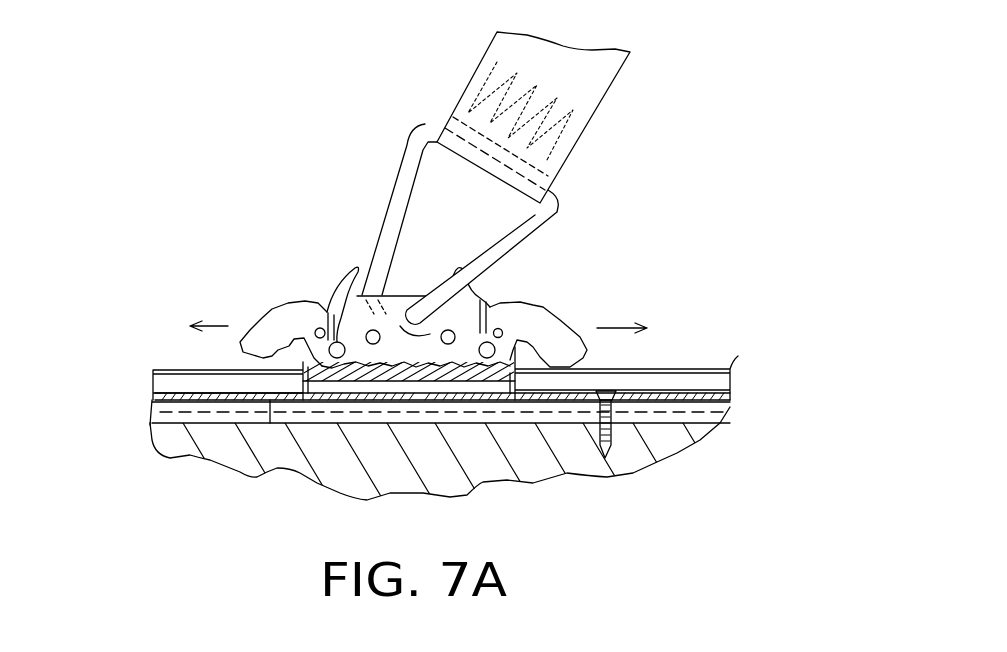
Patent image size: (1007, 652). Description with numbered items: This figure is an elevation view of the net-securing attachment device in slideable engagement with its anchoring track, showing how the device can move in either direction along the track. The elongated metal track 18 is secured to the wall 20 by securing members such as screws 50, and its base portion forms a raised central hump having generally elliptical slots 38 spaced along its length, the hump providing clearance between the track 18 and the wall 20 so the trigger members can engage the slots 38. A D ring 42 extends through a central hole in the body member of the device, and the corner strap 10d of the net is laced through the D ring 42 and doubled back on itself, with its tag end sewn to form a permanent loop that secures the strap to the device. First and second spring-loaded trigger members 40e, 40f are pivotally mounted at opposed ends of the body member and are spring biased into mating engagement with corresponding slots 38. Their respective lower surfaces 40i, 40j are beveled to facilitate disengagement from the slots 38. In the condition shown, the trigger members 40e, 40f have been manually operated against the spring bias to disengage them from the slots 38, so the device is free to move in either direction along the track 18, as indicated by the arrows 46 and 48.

The corner strap 10d is at (597, 85).
The D ring 42 is at (388, 200).
The second trigger member 40f is at (268, 305).
The first trigger member 40e is at (533, 303).
The lower surface of trigger member 40j is at (237, 350).
The lower surface of trigger member 40i is at (578, 355).
The arrow 48 is at (213, 320).
The arrow 46 is at (618, 318).
The track 18 is at (680, 367).
The wall 20 is at (670, 443).
The slots 38 is at (270, 398).
The screws 50 is at (608, 443).